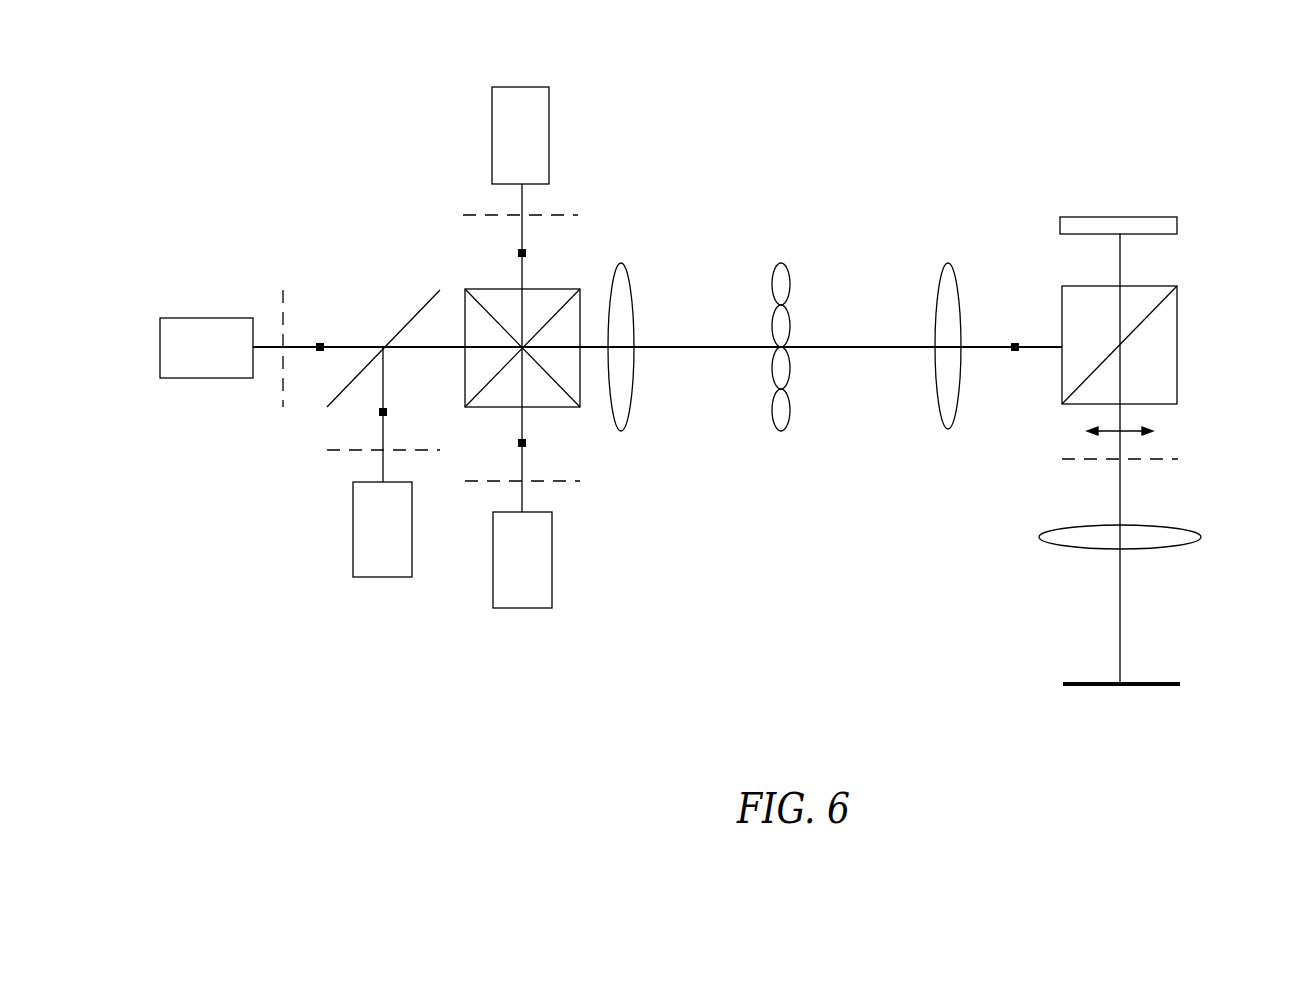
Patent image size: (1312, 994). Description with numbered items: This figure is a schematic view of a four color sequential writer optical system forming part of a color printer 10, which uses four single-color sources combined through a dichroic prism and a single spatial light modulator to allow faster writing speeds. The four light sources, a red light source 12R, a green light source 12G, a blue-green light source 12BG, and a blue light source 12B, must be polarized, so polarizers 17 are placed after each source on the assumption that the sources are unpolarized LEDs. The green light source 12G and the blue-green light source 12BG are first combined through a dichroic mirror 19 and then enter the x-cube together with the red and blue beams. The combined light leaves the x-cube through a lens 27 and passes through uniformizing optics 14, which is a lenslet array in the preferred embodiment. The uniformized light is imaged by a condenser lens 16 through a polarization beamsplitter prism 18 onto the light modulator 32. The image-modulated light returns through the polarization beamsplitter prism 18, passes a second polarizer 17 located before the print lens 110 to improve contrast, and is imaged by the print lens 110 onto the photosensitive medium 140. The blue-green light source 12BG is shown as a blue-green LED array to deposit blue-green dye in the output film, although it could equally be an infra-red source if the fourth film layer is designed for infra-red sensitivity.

The color printer 10 is at (1135, 182).
The blue-green light source 12BG is at (207, 318).
The blue light source 12B is at (492, 122).
The green light source 12G is at (355, 568).
The red light source 12R is at (495, 600).
The uniformizing optics 14 is at (771, 278).
The condenser lens 16 is at (935, 307).
The polarizer 17 is at (283, 290).
The polarization beamsplitter prism 18 is at (1178, 315).
The dichroic mirror 19 is at (410, 322).
The lens 27 is at (633, 300).
The light modulator 32 is at (1178, 225).
The print lens 110 is at (1193, 538).
The photosensitive medium 140 is at (1180, 684).